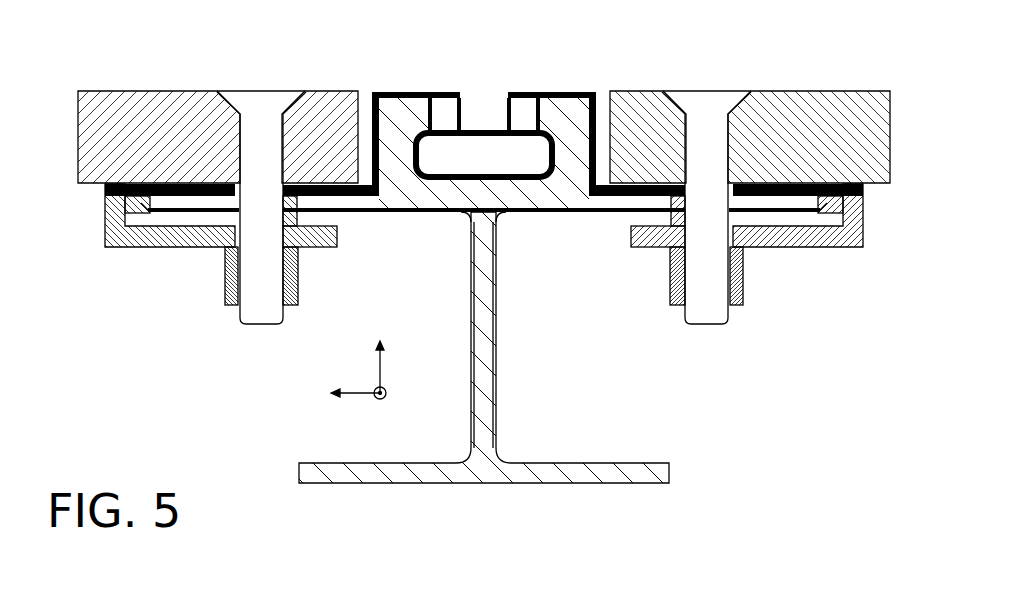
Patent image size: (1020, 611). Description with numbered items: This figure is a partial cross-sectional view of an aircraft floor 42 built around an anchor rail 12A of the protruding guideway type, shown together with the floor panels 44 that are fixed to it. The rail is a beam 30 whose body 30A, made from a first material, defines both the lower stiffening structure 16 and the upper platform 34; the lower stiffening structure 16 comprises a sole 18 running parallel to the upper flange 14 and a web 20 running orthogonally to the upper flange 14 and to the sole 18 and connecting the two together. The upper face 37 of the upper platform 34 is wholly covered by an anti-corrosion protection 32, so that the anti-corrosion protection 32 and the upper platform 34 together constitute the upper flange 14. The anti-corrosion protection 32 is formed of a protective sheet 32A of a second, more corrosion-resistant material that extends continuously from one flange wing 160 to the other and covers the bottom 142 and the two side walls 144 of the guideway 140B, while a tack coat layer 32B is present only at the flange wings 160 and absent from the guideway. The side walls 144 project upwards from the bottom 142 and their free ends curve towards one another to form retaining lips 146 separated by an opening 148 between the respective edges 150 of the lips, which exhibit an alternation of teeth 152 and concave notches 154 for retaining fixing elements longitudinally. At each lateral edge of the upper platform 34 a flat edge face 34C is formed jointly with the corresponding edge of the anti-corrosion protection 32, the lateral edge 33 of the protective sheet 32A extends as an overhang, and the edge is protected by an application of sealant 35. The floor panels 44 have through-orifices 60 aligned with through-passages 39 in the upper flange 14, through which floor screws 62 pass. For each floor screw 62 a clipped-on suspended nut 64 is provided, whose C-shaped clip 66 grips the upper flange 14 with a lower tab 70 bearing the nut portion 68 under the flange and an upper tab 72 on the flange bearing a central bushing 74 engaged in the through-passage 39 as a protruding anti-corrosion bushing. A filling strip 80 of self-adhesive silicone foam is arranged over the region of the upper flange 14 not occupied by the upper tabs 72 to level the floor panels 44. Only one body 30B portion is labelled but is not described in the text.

The anchor rail 12A is at (460, 297).
The upper flange 14 is at (484, 325).
The lower stiffening structure 16 is at (484, 398).
The sole 18 is at (484, 398).
The web 20 is at (484, 398).
The beam 30 is at (484, 398).
The body 30A is at (484, 381).
The base plate second portion 30B is at (335, 552).
The anti-corrosion protection 32 is at (484, 325).
The protective sheet 32A is at (498, 255).
The tack coat layer 32B is at (652, 212).
The lateral edge 33 is at (833, 187).
The upper platform 34 is at (650, 212).
The flat edge face 34C is at (133, 266).
The sealant 35 is at (845, 205).
The upper face 37 is at (360, 183).
The through-passage 39 is at (275, 205).
The floor 42 is at (218, 97).
The floor panels 44 is at (218, 119).
The through-orifices 60 is at (261, 214).
The floor screws 62 is at (283, 150).
The clipped-on suspended nut 64 is at (143, 266).
The clip 66 is at (143, 266).
The nut portion 68 is at (226, 272).
The lower tab 70 is at (165, 248).
The upper tab 72 is at (158, 183).
The central bushing 74 is at (206, 183).
The filling strip 80 is at (633, 183).
The guideway 140B is at (491, 146).
The bottom 142 is at (484, 191).
The side walls 144 is at (395, 157).
The retaining lips 146 is at (441, 143).
The opening 148 is at (480, 117).
The edges 150 is at (468, 72).
The teeth 152 is at (534, 90).
The concave notches 154 is at (432, 130).
The flange wings 160 is at (193, 218).